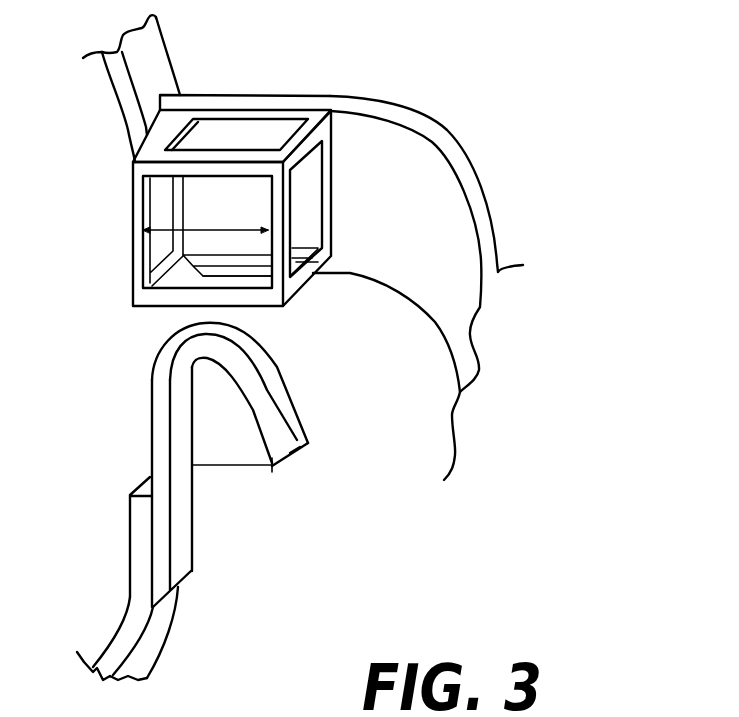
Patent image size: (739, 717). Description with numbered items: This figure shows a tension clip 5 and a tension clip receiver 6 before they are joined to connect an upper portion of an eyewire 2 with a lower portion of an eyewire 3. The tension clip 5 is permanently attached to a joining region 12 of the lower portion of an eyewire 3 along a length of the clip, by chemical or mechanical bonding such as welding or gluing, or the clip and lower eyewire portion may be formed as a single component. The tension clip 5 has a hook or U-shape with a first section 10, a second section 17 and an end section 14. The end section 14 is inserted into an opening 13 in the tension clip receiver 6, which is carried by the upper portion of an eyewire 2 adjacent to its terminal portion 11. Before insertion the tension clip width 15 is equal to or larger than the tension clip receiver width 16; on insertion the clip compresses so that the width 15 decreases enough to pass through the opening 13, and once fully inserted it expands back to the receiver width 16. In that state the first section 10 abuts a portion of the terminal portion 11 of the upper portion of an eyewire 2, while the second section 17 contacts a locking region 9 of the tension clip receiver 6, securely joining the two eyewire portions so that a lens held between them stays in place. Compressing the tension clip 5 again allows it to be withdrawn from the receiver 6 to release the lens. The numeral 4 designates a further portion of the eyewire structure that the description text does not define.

The upper portion of an eyewire 2 is at (155, 69).
The lower portion of an eyewire 3 is at (158, 642).
The upper connecting portion 4 is at (452, 189).
The tension clip 5 is at (340, 405).
The tension clip receiver 6 is at (281, 98).
The locking region 9 is at (320, 258).
The first section 10 is at (153, 425).
The terminal portion 11 is at (157, 198).
The joining region 12 is at (157, 550).
The opening 13 is at (222, 278).
The end section 14 is at (293, 334).
The tension clip width 15 is at (220, 467).
The tension clip receiver width 16 is at (198, 223).
The second section 17 is at (299, 447).